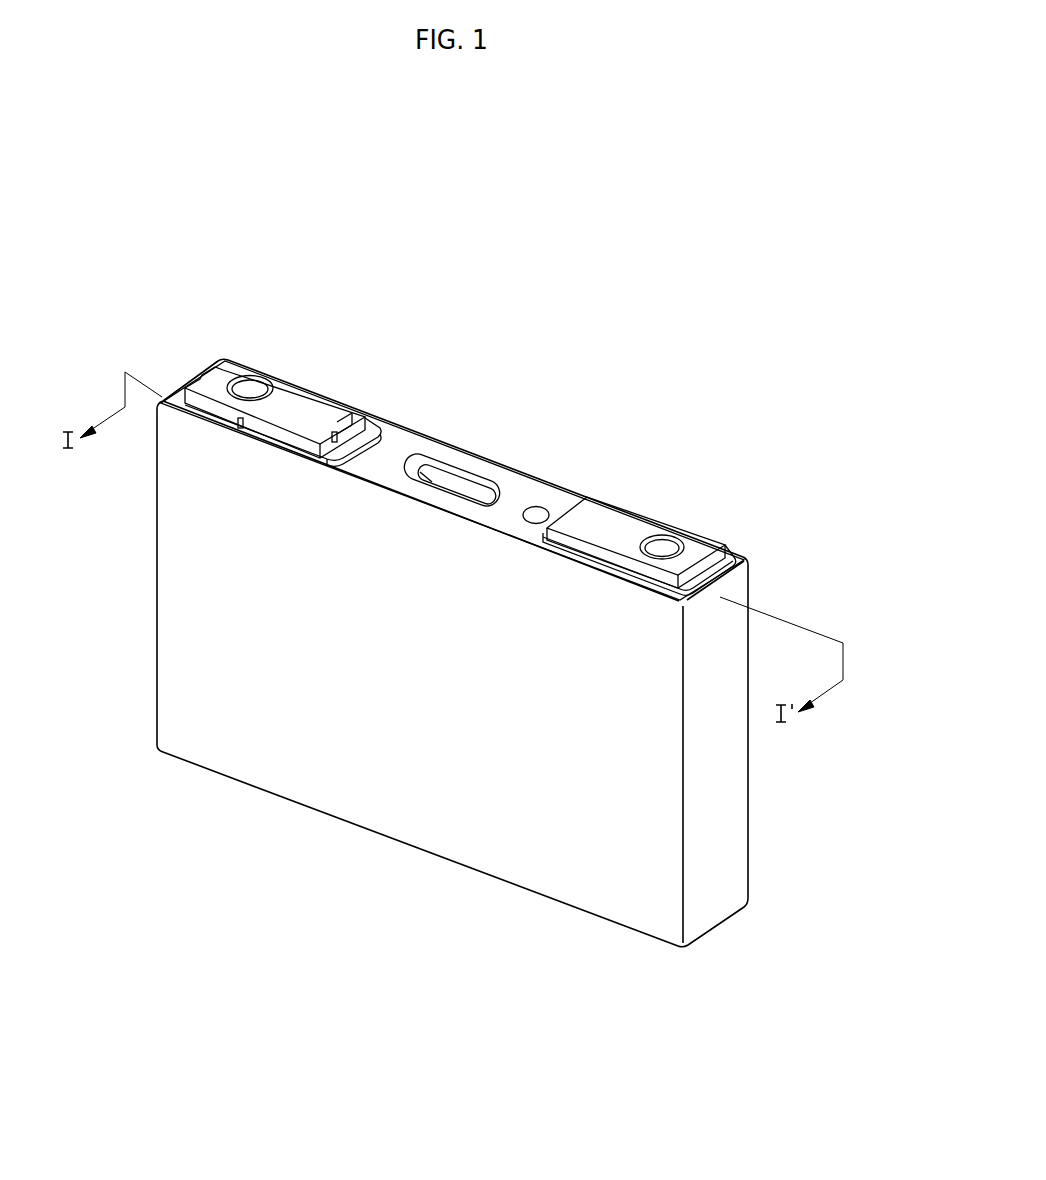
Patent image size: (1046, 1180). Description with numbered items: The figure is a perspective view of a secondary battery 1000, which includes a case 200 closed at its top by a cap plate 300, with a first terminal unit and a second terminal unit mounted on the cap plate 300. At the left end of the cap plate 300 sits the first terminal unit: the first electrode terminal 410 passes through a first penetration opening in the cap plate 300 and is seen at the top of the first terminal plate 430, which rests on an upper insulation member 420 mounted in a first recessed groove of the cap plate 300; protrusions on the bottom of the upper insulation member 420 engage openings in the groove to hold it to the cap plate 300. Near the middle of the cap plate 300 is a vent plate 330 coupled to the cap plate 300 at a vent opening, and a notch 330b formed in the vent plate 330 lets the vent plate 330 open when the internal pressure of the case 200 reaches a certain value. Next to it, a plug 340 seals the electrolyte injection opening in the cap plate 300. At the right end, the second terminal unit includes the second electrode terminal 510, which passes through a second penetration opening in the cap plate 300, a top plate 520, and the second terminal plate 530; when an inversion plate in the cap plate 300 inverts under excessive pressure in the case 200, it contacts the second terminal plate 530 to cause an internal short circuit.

The secondary battery 1000 is at (117, 281).
The case 200 is at (408, 804).
The cap plate 300 is at (523, 483).
The vent plate 330 is at (468, 487).
The notch 330b is at (440, 473).
The plug 340 is at (546, 506).
The first electrode terminal 410 is at (250, 380).
The upper insulation member 420 is at (380, 428).
The first terminal plate 430 is at (312, 398).
The second electrode terminal 510 is at (672, 534).
The top plate 520 is at (729, 552).
The second terminal plate 530 is at (622, 513).